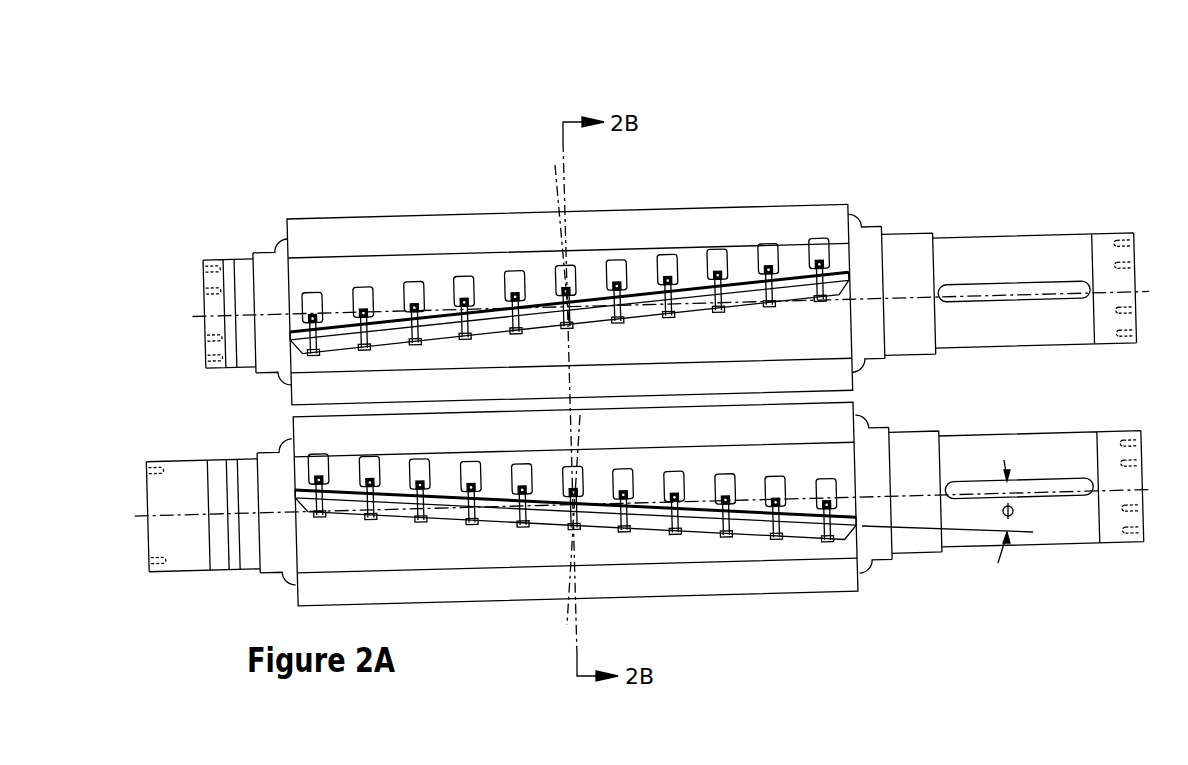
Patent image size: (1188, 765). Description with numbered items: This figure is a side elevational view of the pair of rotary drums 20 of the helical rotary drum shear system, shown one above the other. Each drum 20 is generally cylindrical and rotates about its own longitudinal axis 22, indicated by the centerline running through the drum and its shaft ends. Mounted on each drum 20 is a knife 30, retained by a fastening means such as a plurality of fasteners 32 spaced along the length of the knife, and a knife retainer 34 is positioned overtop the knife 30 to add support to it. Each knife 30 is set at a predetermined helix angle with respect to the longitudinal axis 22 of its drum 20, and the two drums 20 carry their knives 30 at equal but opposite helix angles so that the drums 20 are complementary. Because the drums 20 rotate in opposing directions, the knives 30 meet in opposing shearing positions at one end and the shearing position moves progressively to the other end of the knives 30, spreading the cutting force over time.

The drum 20 is at (730, 207).
The longitudinal axis 22 is at (905, 298).
The knife 30 is at (710, 293).
The fasteners 32 is at (364, 302).
The knife retainer 34 is at (838, 292).